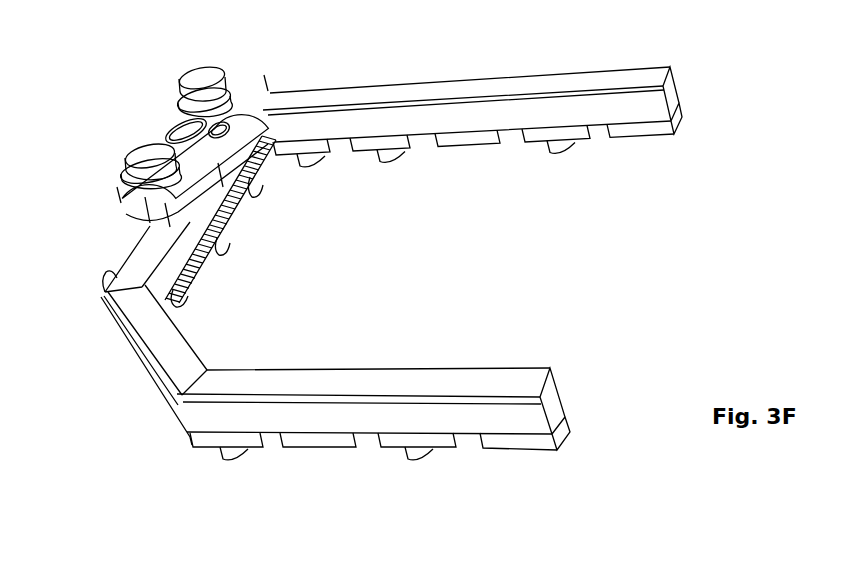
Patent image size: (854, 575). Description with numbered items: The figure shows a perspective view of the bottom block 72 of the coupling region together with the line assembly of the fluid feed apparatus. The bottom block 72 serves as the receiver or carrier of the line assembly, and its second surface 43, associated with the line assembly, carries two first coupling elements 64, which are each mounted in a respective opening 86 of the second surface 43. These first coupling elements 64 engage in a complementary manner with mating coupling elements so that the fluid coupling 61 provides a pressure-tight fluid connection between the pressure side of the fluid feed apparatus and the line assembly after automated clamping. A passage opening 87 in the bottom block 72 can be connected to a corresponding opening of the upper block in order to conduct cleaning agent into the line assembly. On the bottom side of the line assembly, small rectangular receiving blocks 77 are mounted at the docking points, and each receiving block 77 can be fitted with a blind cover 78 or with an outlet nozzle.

The second surface 43 is at (240, 122).
The fluid coupling 61 is at (173, 135).
The first coupling element 64 is at (210, 70).
The bottom block 72 is at (207, 200).
The receiving block 77 is at (342, 448).
The blind cover 78 is at (418, 455).
The opening 86 is at (228, 97).
The passage opening 87 is at (238, 127).